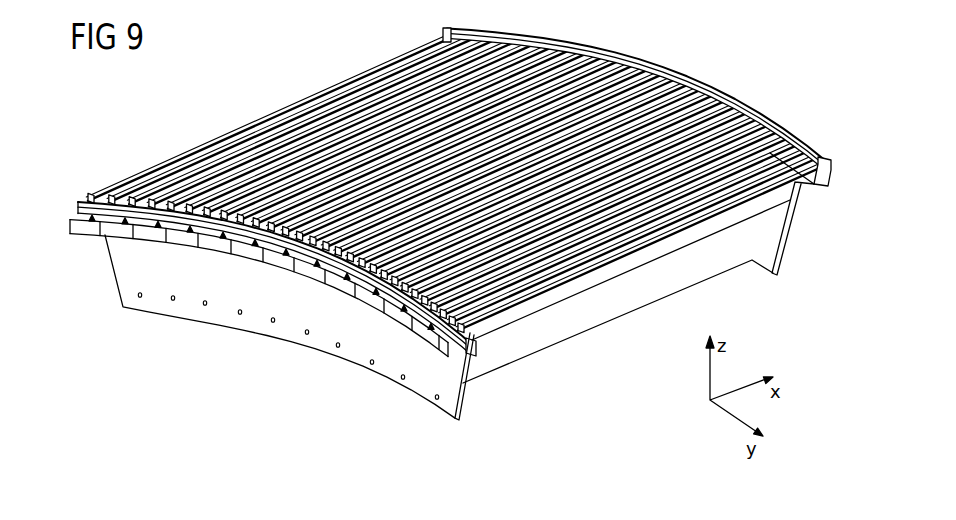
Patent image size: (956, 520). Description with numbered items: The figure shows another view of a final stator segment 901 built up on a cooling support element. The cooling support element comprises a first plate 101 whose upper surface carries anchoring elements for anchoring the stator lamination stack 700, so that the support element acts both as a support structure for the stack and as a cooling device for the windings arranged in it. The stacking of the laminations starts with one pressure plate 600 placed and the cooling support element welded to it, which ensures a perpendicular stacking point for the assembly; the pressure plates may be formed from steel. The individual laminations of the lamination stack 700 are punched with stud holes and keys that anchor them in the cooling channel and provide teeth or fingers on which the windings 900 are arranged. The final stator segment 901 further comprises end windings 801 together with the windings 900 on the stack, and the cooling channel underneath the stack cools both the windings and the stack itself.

The windings 900 is at (450, 224).
The end windings 801 is at (237, 257).
The pressure plate 600 is at (424, 394).
The first plate 101 is at (568, 332).
The lamination stack 700 is at (687, 238).
The stator segment 901 is at (620, 276).